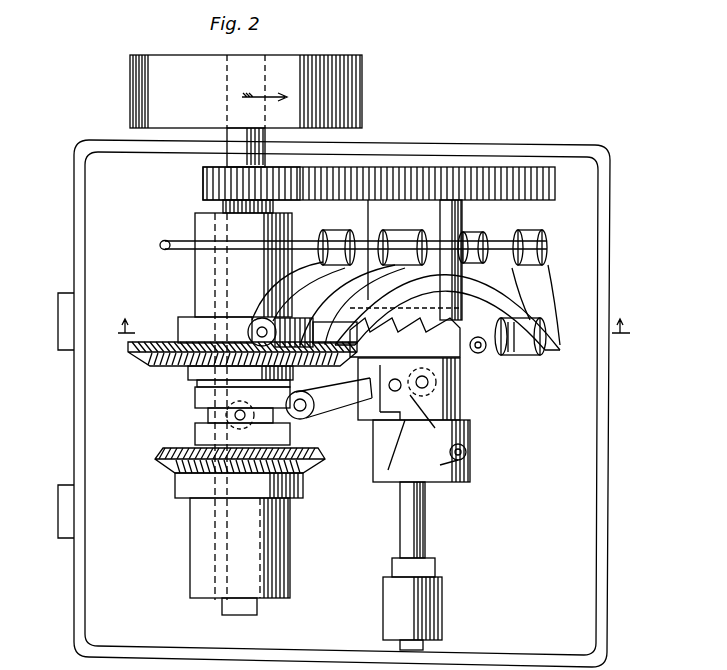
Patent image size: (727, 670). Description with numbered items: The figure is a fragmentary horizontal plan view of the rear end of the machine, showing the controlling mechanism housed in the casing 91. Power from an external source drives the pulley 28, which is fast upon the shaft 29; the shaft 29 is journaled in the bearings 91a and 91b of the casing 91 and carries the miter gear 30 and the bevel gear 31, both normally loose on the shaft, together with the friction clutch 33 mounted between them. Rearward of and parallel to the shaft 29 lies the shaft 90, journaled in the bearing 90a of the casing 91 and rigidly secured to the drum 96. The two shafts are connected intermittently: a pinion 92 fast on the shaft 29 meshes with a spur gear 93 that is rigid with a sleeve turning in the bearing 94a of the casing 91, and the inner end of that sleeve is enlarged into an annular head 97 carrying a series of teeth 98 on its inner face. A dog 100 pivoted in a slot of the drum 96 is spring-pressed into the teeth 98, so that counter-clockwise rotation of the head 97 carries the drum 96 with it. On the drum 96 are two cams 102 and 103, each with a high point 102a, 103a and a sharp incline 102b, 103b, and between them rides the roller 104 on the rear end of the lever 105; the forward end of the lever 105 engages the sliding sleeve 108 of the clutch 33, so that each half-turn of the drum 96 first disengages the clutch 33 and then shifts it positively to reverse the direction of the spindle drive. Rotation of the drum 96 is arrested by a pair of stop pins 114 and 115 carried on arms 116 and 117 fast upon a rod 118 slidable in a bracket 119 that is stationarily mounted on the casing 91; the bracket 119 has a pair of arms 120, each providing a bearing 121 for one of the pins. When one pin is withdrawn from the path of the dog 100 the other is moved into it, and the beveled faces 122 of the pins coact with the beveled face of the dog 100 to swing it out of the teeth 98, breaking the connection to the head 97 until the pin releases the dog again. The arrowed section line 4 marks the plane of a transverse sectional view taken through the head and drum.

The pulley 28 is at (246, 91).
The shaft 29 is at (232, 148).
The pinion 92 is at (203, 185).
The spur gear 93 is at (443, 182).
The bearing 94a is at (462, 216).
The casing 91 is at (598, 485).
The bearing 91a is at (200, 283).
The bearing 91b is at (192, 540).
The rod 118 is at (168, 250).
The bracket 119 is at (403, 238).
The arms 120 is at (500, 285).
The arm 117 is at (270, 307).
The stop pin 115 is at (340, 306).
The arm 116 is at (497, 300).
The stop pin 114 is at (500, 318).
The head 97 is at (493, 305).
The bearing 121 is at (520, 340).
The beveled faces 122 is at (505, 350).
The dog 100 is at (482, 352).
The miter gear 30 is at (142, 356).
The bevel gear 31 is at (162, 452).
The friction clutch 33 is at (179, 408).
The sliding sleeve 108 is at (200, 418).
The lever 105 is at (372, 388).
The cam 102 is at (372, 404).
The high point 102a is at (390, 470).
The sharp incline 102b is at (392, 380).
The teeth 98 is at (405, 332).
The drum 96 is at (392, 488).
The roller 104 is at (438, 388).
The cam 103 is at (470, 442).
The high point 103a is at (448, 400).
The sharp incline 103b is at (462, 461).
The shaft 90 is at (425, 537).
The bearing 90a is at (442, 598).
The section line 4 is at (367, 330).